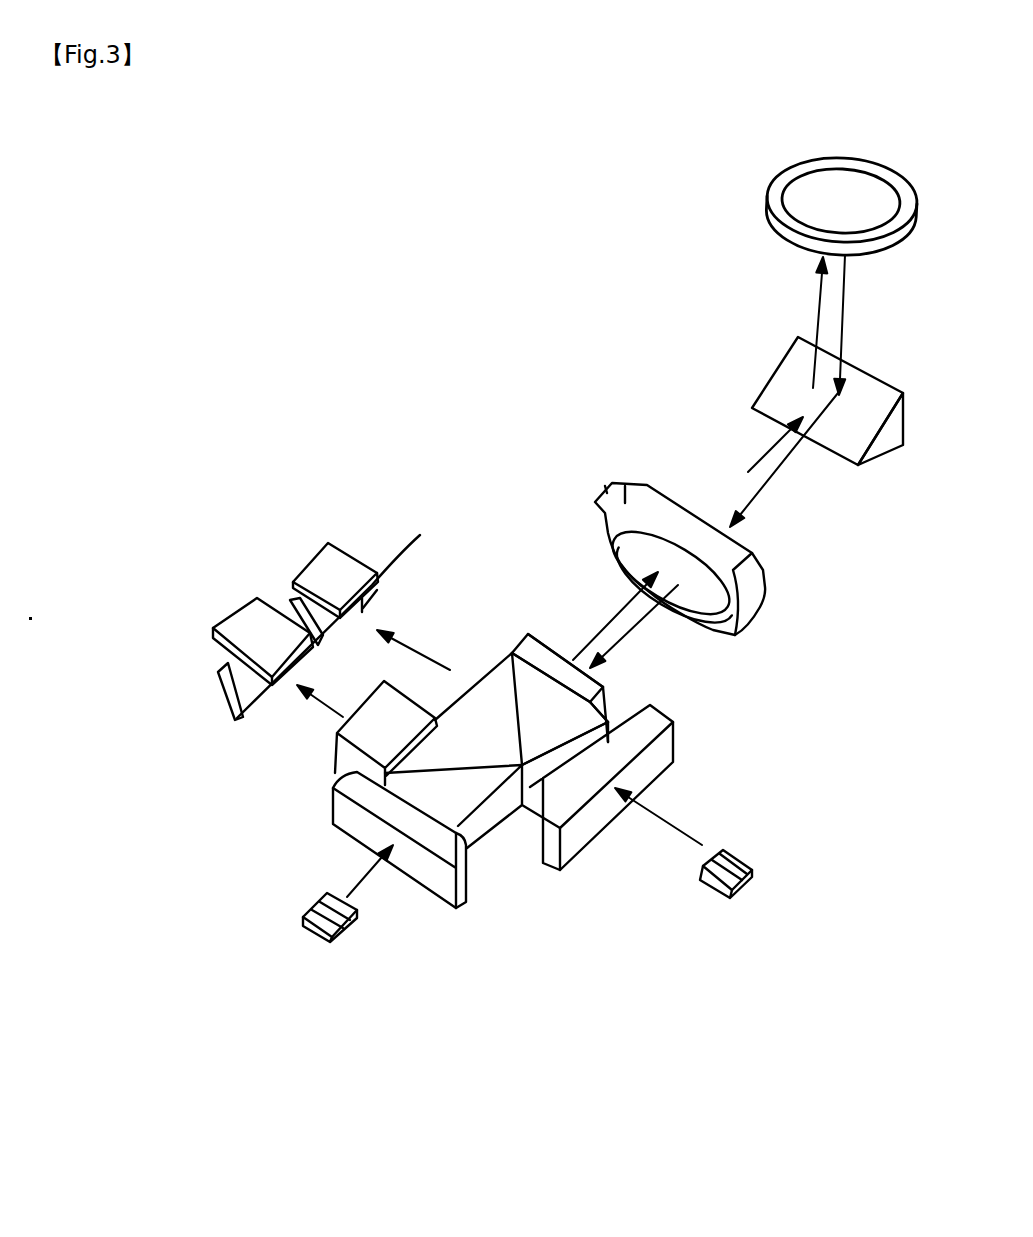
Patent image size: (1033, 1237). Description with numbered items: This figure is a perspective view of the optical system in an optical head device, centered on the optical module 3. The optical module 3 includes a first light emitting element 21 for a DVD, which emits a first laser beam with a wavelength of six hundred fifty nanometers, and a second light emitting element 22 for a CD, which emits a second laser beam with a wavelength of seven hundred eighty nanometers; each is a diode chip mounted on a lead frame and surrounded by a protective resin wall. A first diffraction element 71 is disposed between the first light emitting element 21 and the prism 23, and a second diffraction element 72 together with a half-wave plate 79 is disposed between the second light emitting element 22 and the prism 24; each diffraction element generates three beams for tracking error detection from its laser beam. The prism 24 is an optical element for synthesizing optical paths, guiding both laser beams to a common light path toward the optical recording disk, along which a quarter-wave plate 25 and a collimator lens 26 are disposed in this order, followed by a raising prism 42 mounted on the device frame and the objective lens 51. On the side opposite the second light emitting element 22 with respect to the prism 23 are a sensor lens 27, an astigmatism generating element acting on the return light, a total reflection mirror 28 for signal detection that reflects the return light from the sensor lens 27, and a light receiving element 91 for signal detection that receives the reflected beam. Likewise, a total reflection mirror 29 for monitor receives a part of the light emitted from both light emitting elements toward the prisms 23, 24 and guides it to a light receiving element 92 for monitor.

The optical module 3 is at (615, 452).
The first light emitting element 21 is at (330, 940).
The second light emitting element 22 is at (707, 883).
The prism 23 is at (492, 820).
The prism 24 is at (563, 710).
The λ/4 plate 25 is at (597, 678).
The collimator lens 26 is at (755, 588).
The sensor lens 27 is at (337, 733).
The total reflection mirror for signal detection 28 is at (223, 687).
The total reflection mirror for monitor 29 is at (420, 535).
The raising prism 42 is at (778, 370).
The objective lens 51 is at (813, 210).
The first diffraction element 71 is at (427, 868).
The second diffraction element 72 is at (632, 748).
The λ/2 plate 79 is at (590, 720).
The light receiving element for signal detection 91 is at (260, 630).
The light receiving element for monitor 92 is at (338, 587).